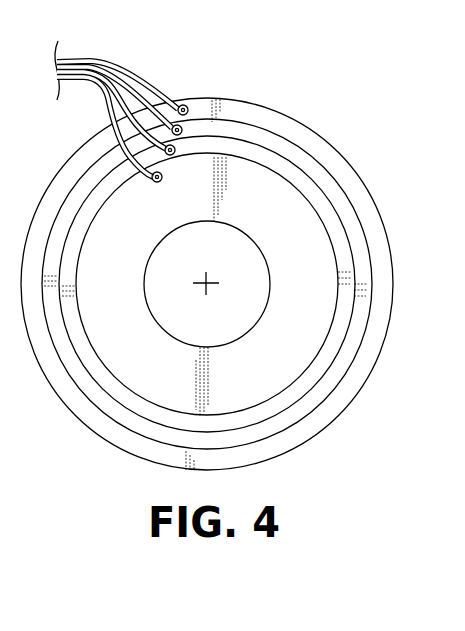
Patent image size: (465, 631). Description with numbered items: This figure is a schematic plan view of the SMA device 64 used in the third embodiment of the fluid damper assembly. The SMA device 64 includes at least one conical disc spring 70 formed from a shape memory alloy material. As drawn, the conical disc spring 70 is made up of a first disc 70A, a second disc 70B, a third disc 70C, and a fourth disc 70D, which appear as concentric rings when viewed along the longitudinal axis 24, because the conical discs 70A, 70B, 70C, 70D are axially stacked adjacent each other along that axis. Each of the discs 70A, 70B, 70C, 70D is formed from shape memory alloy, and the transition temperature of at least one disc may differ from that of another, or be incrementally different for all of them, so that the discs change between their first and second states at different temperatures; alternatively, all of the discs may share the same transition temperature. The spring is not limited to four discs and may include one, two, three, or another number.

The longitudinal axis 24 is at (209, 289).
The SMA device 64 is at (300, 92).
The conical disc spring 70 is at (227, 290).
The first disc 70A is at (317, 152).
The second disc 70B is at (325, 190).
The third disc 70C is at (330, 235).
The fourth disc 70D is at (312, 310).